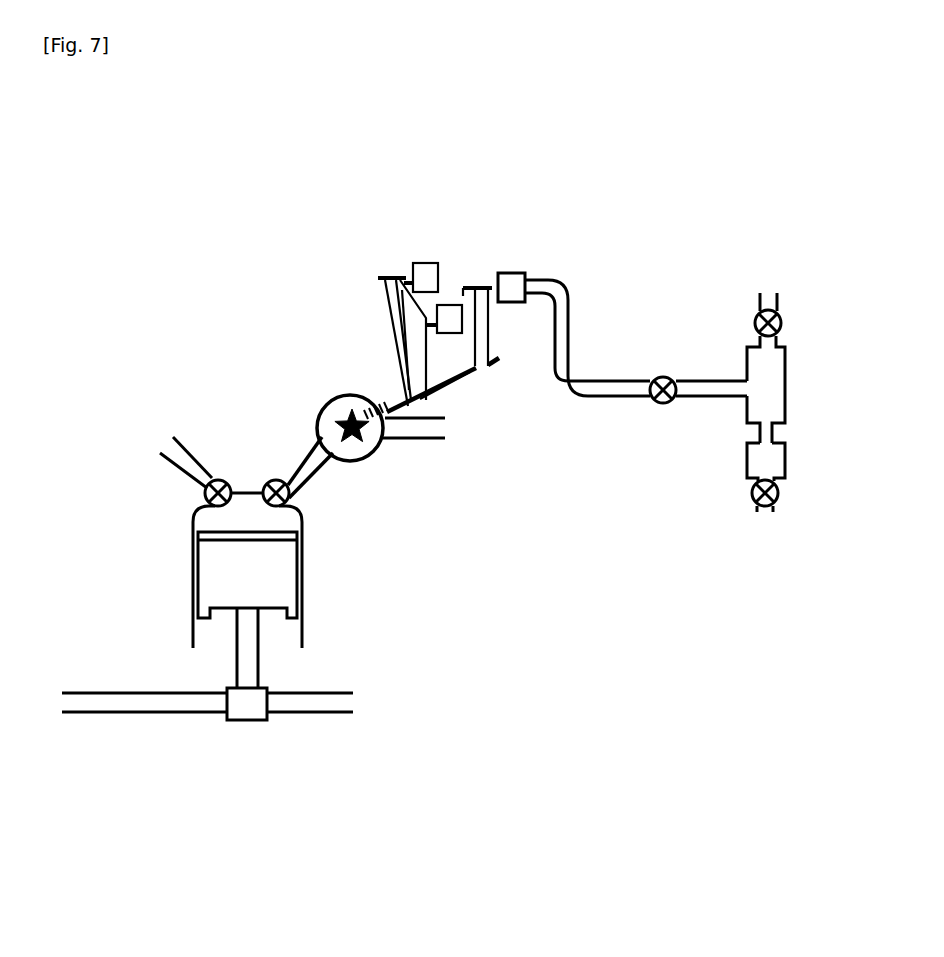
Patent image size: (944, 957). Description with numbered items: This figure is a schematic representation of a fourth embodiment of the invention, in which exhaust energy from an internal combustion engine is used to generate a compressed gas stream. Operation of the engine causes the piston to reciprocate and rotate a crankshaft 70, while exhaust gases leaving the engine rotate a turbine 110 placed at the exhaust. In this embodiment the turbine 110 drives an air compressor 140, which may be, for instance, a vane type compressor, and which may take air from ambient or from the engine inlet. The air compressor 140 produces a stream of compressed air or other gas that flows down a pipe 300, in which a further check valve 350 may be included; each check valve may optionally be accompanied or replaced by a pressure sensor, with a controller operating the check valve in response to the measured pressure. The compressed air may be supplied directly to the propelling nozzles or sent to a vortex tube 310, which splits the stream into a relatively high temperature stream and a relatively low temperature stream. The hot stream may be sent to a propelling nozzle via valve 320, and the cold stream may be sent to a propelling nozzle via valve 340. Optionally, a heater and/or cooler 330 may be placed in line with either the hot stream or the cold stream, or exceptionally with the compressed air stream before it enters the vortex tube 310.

The crankshaft 70 is at (286, 707).
The turbine 110 is at (333, 408).
The air compressor 140 is at (512, 273).
The pipe 300 is at (557, 396).
The vortex tube 310 is at (757, 365).
The valve 320 is at (778, 315).
The heater and/or cooler 330 is at (757, 462).
The valve 340 is at (768, 507).
The check valve 350 is at (649, 399).